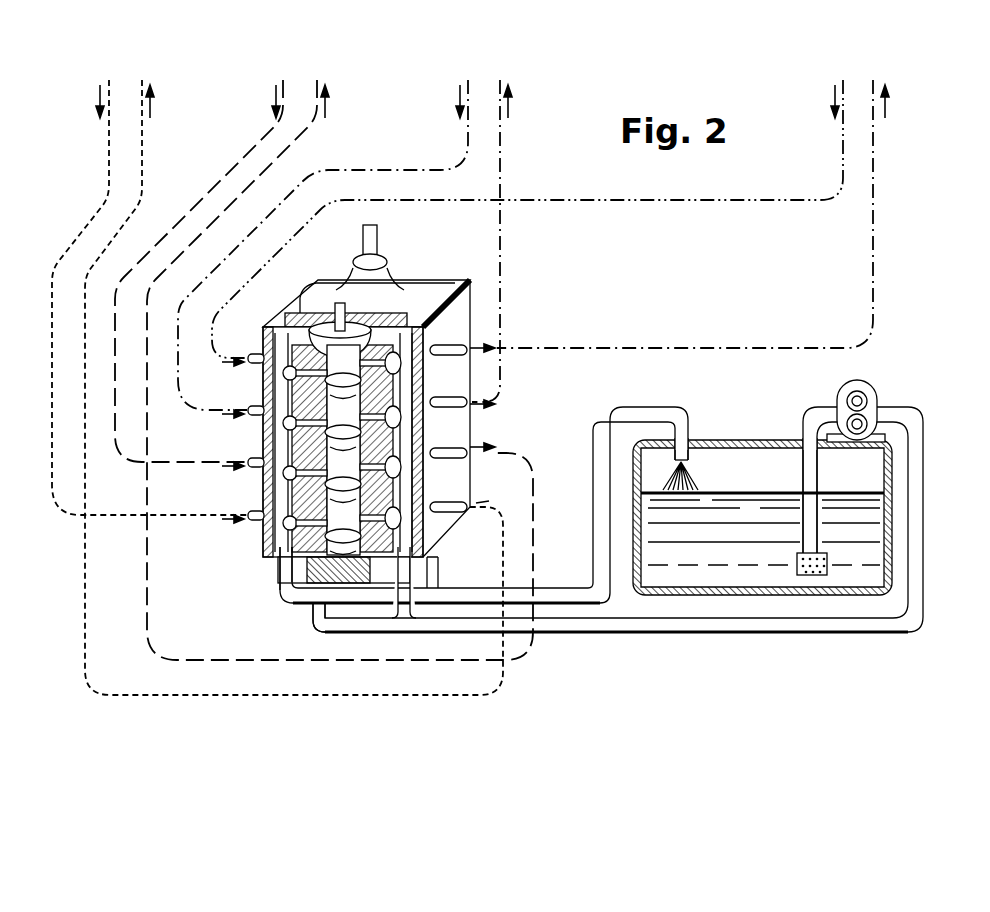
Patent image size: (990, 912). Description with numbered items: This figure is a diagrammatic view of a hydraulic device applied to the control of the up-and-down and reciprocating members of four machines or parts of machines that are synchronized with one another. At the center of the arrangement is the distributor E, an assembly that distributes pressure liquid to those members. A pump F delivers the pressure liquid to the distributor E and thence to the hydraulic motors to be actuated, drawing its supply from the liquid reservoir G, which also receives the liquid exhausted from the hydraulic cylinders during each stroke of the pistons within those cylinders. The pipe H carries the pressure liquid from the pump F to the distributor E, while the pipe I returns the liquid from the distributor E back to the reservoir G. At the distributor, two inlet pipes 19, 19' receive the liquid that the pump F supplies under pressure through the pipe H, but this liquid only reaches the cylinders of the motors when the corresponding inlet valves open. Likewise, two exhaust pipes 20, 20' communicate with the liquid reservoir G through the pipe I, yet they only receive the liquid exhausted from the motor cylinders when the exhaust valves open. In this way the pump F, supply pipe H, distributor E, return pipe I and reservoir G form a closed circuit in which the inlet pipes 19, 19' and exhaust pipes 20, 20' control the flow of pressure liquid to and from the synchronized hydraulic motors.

The distributor assembly E is at (437, 290).
The return pipe I is at (626, 411).
The liquid reservoir G is at (745, 462).
The pump F is at (874, 403).
The supply pipe H is at (915, 538).
The exhaust pipe 20 is at (459, 554).
The exhaust pipe 20' is at (261, 568).
The inlet pipe 19 is at (395, 582).
The inlet pipe 19' is at (298, 623).